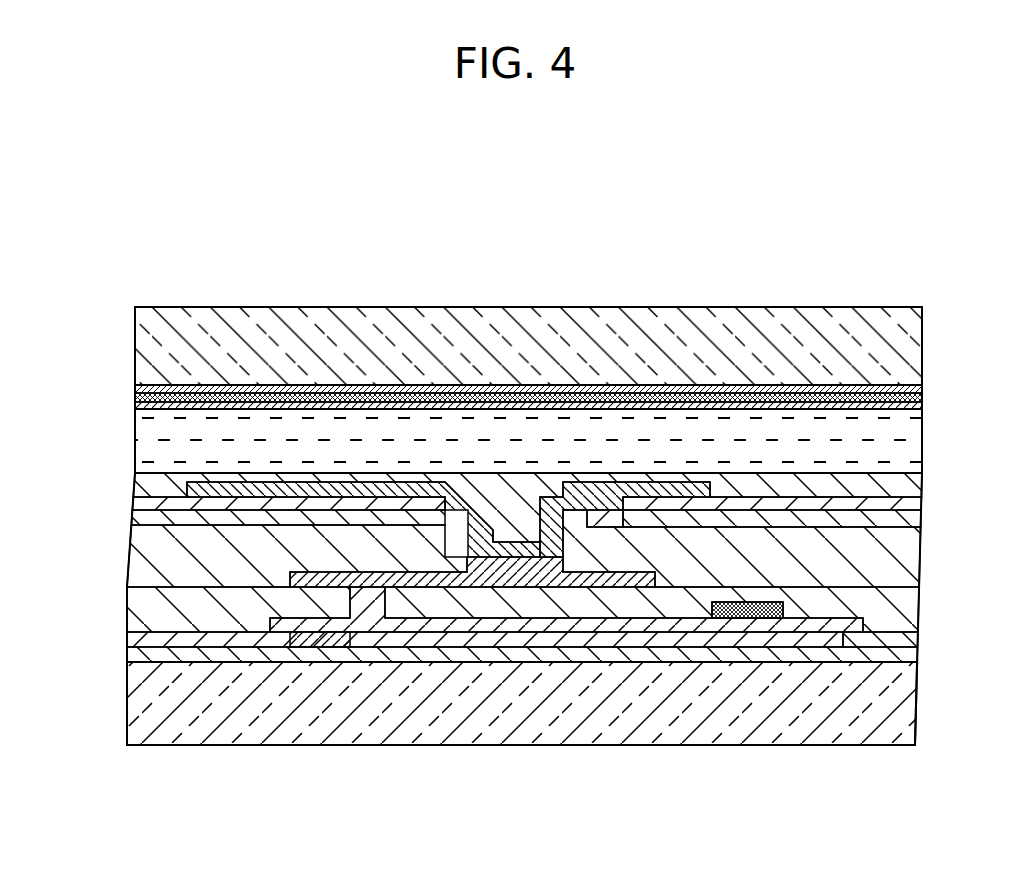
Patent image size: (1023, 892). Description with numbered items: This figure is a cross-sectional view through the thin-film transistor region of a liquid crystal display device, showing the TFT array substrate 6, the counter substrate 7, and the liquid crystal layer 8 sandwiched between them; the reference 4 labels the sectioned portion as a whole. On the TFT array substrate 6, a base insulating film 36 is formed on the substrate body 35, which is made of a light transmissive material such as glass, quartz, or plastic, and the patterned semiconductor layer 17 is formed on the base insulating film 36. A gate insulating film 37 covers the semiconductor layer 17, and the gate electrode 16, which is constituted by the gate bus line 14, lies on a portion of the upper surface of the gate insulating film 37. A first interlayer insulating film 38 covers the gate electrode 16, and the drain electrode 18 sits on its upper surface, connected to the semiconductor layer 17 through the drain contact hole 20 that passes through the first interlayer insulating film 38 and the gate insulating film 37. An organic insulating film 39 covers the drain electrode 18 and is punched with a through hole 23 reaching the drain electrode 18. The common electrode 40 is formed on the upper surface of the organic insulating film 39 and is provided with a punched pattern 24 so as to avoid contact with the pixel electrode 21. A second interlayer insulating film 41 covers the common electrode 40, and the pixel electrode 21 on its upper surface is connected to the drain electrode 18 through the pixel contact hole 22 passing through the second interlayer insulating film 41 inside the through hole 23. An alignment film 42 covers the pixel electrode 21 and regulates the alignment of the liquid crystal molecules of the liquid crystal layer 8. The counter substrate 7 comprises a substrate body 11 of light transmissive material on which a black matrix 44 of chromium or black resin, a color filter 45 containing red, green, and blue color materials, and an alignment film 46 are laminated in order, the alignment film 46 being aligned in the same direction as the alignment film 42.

The electro-optical device 4 is at (878, 236).
The TFT array substrate 6 is at (99, 473).
The counter substrate 7 is at (99, 307).
The liquid crystal layer 8 is at (135, 434).
The substrate body 11 is at (922, 325).
The gate bus line 14 is at (747, 610).
The gate electrode 16 is at (748, 616).
The semiconductor layer 17 is at (684, 647).
The drain electrode 18 is at (617, 582).
The drain contact hole 20 is at (351, 587).
The pixel electrode 21 is at (289, 490).
The pixel contact hole 22 is at (540, 497).
The through hole 23 is at (444, 527).
The punched pattern 24 is at (651, 600).
The substrate body 35 is at (915, 703).
The base insulating film 36 is at (915, 655).
The gate insulating film 37 is at (915, 638).
The first interlayer insulating film 38 is at (915, 608).
The organic insulating film 39 is at (919, 553).
The common electrode 40 is at (788, 518).
The second interlayer insulating film 41 is at (921, 519).
The alignment film 42 is at (921, 484).
The black matrix 44 is at (922, 388).
The color filter 45 is at (922, 397).
The alignment film 46 is at (922, 406).